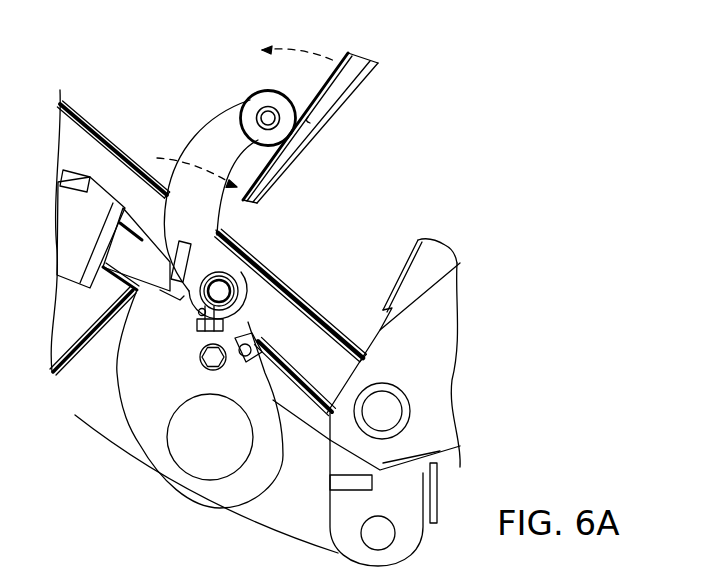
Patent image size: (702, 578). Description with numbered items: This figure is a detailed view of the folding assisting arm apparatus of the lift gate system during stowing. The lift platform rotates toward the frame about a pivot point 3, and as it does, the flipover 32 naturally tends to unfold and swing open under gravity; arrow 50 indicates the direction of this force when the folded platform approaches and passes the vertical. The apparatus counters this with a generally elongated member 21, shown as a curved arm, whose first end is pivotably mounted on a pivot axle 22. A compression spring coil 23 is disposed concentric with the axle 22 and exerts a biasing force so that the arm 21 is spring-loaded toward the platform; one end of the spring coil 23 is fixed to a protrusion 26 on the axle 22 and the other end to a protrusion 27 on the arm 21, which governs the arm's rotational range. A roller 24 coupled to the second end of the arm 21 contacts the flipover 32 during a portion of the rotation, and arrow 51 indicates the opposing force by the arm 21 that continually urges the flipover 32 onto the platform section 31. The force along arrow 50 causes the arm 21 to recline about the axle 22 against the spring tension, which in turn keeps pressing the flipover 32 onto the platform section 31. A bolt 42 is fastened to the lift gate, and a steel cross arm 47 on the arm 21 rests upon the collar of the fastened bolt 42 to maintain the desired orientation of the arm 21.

The pivot point 3 is at (375, 407).
The elongated member 21 is at (204, 140).
The pivot axle 22 is at (217, 292).
The compression spring coil 23 is at (235, 303).
The roller 24 is at (276, 100).
The protrusion 26 is at (227, 327).
The protrusion 27 is at (218, 233).
The platform section 31 is at (430, 273).
The flipover 32 is at (325, 100).
The bolt 42 is at (202, 364).
The steel cross arm 47 is at (243, 360).
The arrow 50 is at (325, 60).
The arrow 51 is at (172, 158).